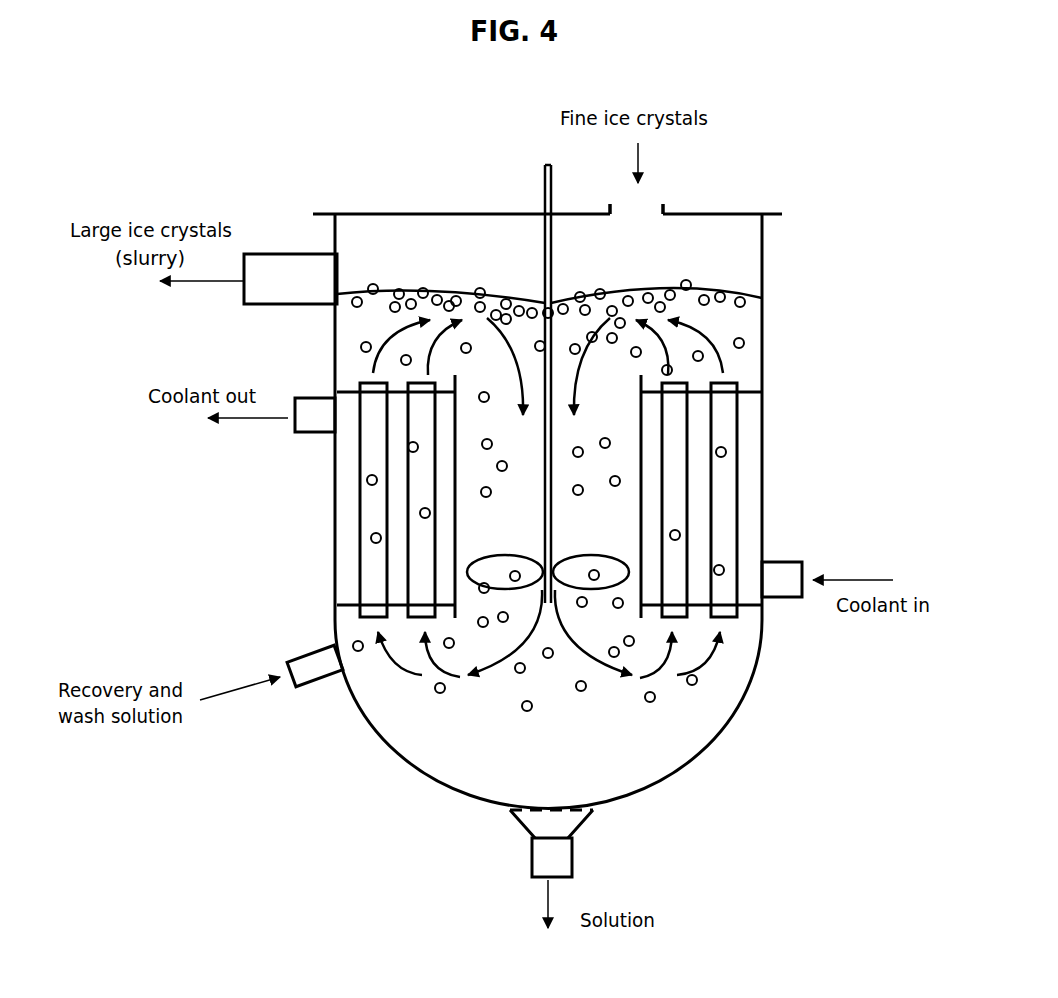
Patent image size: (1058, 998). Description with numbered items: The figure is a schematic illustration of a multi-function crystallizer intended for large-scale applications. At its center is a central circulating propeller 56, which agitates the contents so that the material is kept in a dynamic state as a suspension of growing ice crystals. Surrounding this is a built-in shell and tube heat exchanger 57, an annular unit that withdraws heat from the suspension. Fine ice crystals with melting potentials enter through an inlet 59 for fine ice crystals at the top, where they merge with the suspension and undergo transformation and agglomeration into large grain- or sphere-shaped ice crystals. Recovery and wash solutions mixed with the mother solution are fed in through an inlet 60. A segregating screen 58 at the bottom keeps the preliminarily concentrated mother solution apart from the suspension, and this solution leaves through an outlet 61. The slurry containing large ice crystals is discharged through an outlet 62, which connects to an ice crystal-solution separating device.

The central circulating propeller 56 is at (545, 172).
The built-in shell and tube heat exchanger 57 is at (745, 483).
The segregating screen 58 is at (545, 810).
The inlet for fine ice crystals 59 is at (652, 203).
The inlet for recovery and wash solutions 60 is at (305, 652).
The outlet for the preliminarily concentrated solution 61 is at (565, 857).
The outlet for the slurry containing large ice crystals 62 is at (297, 252).